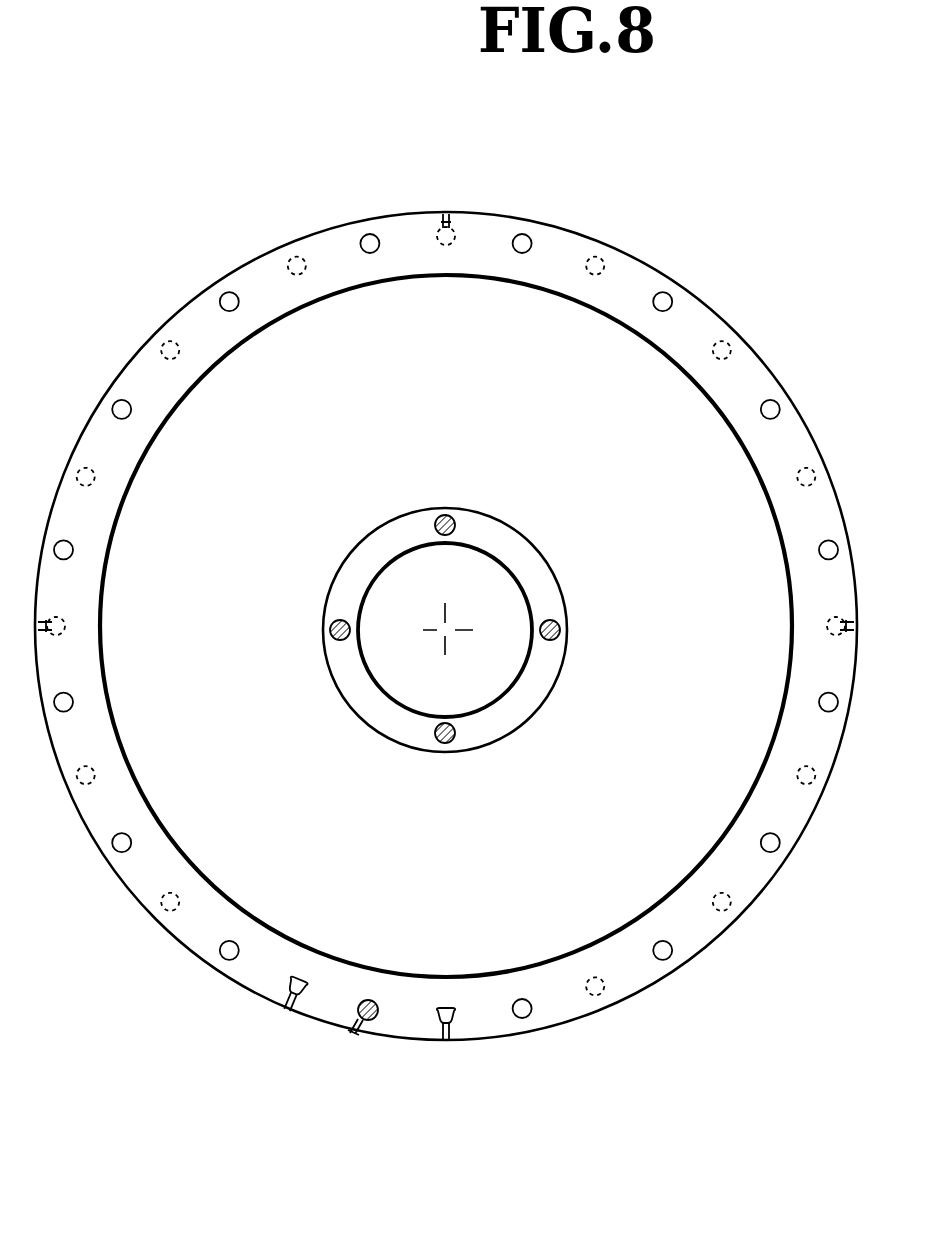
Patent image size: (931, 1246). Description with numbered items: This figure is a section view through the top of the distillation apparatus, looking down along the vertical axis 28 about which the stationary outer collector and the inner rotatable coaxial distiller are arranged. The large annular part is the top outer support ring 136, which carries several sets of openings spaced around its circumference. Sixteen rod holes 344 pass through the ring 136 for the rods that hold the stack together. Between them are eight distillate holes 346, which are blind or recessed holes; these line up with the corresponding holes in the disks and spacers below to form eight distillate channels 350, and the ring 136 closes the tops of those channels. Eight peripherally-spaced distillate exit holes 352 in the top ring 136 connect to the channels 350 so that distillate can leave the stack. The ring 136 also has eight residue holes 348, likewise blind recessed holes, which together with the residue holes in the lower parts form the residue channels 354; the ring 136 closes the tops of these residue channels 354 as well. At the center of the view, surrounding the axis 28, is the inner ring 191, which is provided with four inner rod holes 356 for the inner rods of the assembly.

The vertical axis 28 is at (445, 626).
The top outer support ring 136 is at (220, 975).
The inner ring 191 is at (360, 720).
The rod holes 344 is at (356, 1032).
The distillate holes 346 is at (498, 1004).
The residue holes 348 is at (258, 950).
The distillate channels 350 is at (446, 1009).
The distillate exit holes 352 is at (463, 1047).
The residue channels 354 is at (299, 982).
The inner rod holes 356 is at (458, 745).